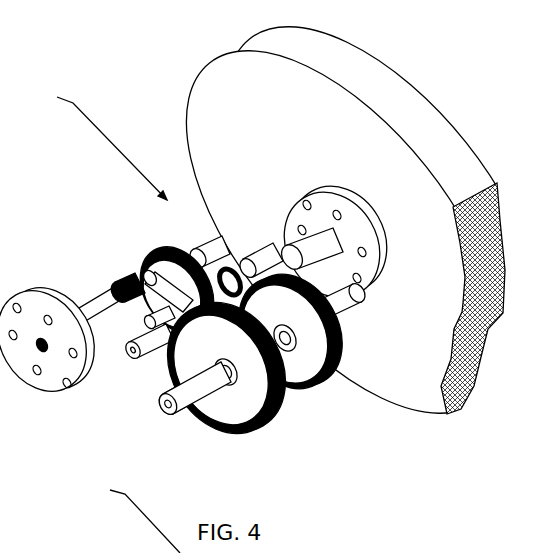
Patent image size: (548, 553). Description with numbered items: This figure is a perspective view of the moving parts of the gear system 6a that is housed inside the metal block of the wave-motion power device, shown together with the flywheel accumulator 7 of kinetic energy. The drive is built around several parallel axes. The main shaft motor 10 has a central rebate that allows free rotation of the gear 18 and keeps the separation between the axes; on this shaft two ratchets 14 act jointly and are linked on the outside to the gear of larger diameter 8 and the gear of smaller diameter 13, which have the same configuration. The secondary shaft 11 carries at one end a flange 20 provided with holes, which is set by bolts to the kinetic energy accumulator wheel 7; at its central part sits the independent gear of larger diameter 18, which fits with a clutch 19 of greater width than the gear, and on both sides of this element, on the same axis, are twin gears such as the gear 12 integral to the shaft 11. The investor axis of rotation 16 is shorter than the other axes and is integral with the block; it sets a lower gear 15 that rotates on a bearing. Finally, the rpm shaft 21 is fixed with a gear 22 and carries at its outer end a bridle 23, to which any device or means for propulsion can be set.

The flywheel accumulator 7 is at (213, 82).
The gear of larger diameter 8 is at (250, 434).
The main shaft motor 10 is at (359, 303).
The secondary shaft 11 is at (284, 246).
The twin gear 12 is at (153, 313).
The gear of smaller diameter 13 is at (343, 356).
The ratchet 14 is at (297, 372).
The lower gear 15 is at (205, 255).
The investor axis of rotation 16 is at (258, 252).
The gear of larger diameter 18 is at (140, 268).
The clutch 19 is at (157, 265).
The flange 20 is at (387, 260).
The rpm shaft 21 is at (78, 295).
The gear 22 is at (113, 273).
The bridle 23 is at (53, 377).
The gear system 6a is at (106, 317).